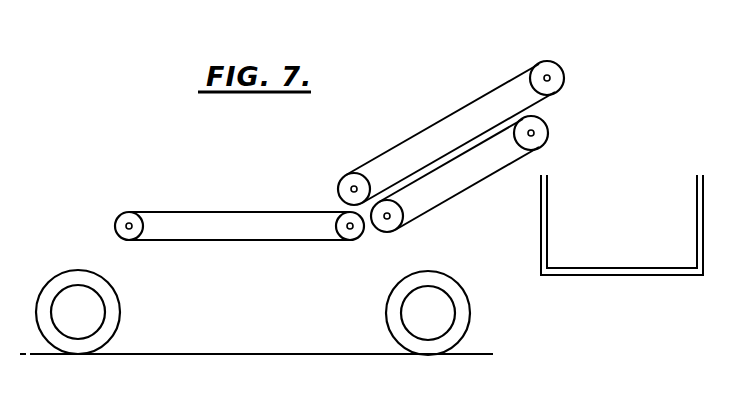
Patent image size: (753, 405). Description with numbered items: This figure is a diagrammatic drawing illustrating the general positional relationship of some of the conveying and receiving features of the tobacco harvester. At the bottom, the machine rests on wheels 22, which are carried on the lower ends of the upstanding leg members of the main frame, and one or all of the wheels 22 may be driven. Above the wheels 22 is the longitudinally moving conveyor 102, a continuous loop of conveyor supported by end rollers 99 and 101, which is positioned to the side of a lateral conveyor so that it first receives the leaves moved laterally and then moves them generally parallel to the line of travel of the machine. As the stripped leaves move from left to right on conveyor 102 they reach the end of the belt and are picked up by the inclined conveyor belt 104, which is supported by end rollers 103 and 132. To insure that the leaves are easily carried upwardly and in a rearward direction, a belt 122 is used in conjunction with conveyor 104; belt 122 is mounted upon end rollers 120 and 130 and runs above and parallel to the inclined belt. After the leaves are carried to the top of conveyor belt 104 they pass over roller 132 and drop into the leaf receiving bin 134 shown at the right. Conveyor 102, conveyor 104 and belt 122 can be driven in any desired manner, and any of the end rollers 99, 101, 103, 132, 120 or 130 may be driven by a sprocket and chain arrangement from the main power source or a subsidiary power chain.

The wheels 22 is at (108, 305).
The end roller 99 is at (119, 223).
The end roller 101 is at (347, 238).
The longitudinally moving conveyor 102 is at (241, 210).
The end roller 103 is at (395, 224).
The inclined conveyor belt 104 is at (458, 196).
The end roller 120 is at (338, 190).
The belt 122 is at (486, 93).
The end roller 130 is at (556, 67).
The end roller 132 is at (538, 125).
The leaf receiving bin 134 is at (697, 193).